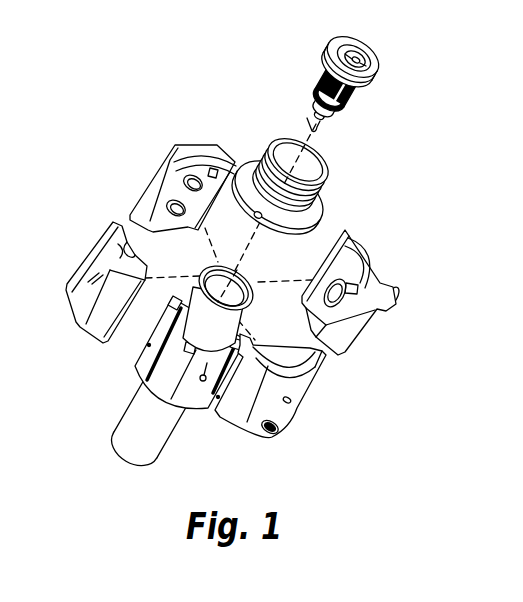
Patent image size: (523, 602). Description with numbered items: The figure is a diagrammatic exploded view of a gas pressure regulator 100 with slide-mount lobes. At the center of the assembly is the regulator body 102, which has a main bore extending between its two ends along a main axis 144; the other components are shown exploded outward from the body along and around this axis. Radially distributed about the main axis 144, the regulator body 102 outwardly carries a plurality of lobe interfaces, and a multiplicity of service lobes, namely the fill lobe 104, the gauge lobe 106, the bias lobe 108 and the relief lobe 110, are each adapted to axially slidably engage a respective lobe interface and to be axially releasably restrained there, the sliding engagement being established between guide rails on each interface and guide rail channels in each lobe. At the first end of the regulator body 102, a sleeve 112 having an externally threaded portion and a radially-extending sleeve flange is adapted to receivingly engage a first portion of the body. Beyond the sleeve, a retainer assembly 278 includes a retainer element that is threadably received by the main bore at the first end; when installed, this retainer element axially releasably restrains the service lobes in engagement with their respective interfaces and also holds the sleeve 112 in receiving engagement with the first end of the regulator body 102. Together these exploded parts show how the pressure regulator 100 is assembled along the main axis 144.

The pressure regulator 100 is at (192, 68).
The regulator body 102 is at (200, 454).
The fill lobe 104 is at (382, 358).
The gauge lobe 106 is at (79, 225).
The bias lobe 108 is at (325, 429).
The relief lobe 110 is at (121, 150).
The sleeve 112 is at (357, 185).
The main axis 144 is at (305, 120).
The retainer assembly 278 is at (395, 98).